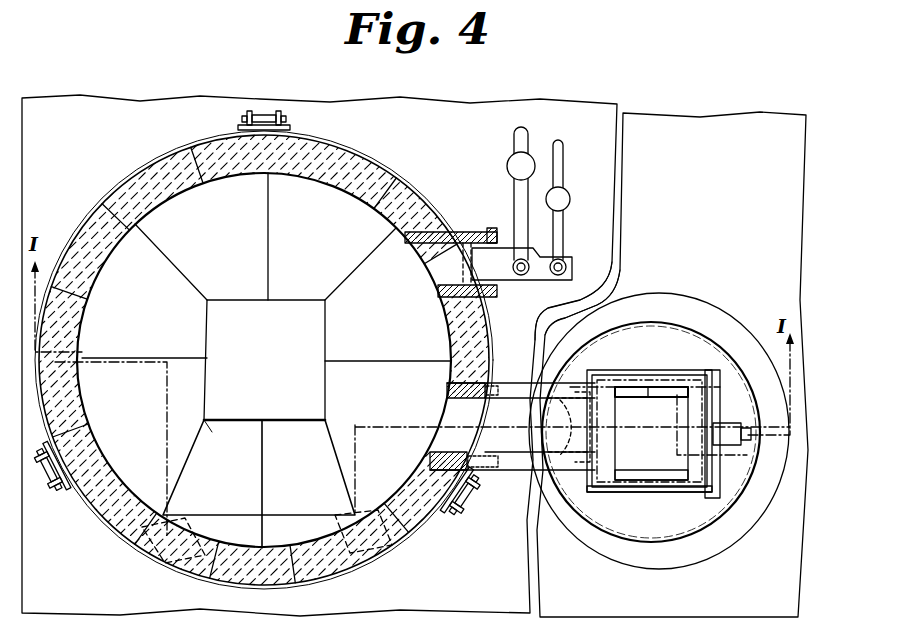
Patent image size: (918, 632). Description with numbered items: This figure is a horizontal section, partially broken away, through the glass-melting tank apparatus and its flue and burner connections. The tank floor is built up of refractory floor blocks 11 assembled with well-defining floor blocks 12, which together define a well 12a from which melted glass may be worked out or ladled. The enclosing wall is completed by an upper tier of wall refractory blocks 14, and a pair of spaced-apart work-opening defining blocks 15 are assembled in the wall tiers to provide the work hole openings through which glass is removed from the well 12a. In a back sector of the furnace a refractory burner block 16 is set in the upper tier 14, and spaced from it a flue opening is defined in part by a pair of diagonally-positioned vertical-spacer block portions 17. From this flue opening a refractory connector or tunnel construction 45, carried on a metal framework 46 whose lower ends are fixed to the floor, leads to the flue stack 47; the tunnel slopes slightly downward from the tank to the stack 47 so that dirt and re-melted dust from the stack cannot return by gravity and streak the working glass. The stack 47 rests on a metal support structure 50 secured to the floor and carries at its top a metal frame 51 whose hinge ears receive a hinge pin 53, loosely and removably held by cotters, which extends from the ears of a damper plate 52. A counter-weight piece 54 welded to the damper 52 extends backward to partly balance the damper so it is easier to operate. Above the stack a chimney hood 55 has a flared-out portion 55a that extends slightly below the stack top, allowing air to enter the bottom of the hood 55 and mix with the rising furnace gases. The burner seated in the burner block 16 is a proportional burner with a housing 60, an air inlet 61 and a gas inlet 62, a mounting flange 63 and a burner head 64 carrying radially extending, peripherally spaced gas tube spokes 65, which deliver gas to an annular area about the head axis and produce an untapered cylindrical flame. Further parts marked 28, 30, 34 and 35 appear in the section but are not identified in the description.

The refractory floor blocks 11 is at (266, 267).
The well-defining floor blocks 12 is at (256, 424).
The well 12a is at (203, 432).
The upper tier of wall refractory blocks 14 is at (98, 512).
The work-opening defining blocks 15 is at (140, 561).
The refractory burner block 16 is at (449, 246).
The vertical-spacer block portions 17 is at (462, 398).
The outer shell 28 is at (190, 143).
The liner 30 is at (150, 172).
The insulating wall segments 34 is at (82, 238).
The clamp bolts 35 is at (300, 118).
The refractory connector or tunnel construction 45 is at (503, 472).
The metal framework 46 is at (562, 406).
The flue stack 47 is at (668, 470).
The metal support structure 50 is at (604, 372).
The metal frame 51 is at (654, 497).
The damper plate 52 is at (700, 412).
The hinge pin 53 is at (714, 370).
The counter-weight piece 54 is at (731, 424).
The chimney hood 55 is at (642, 302).
The flared-out portion 55a is at (708, 312).
The housing 60 is at (546, 297).
The air inlet 61 is at (514, 137).
The gas inlet 62 is at (563, 160).
The mounting flange 63 is at (491, 230).
The burner head 64 is at (475, 260).
The gas tube spokes 65 is at (468, 245).